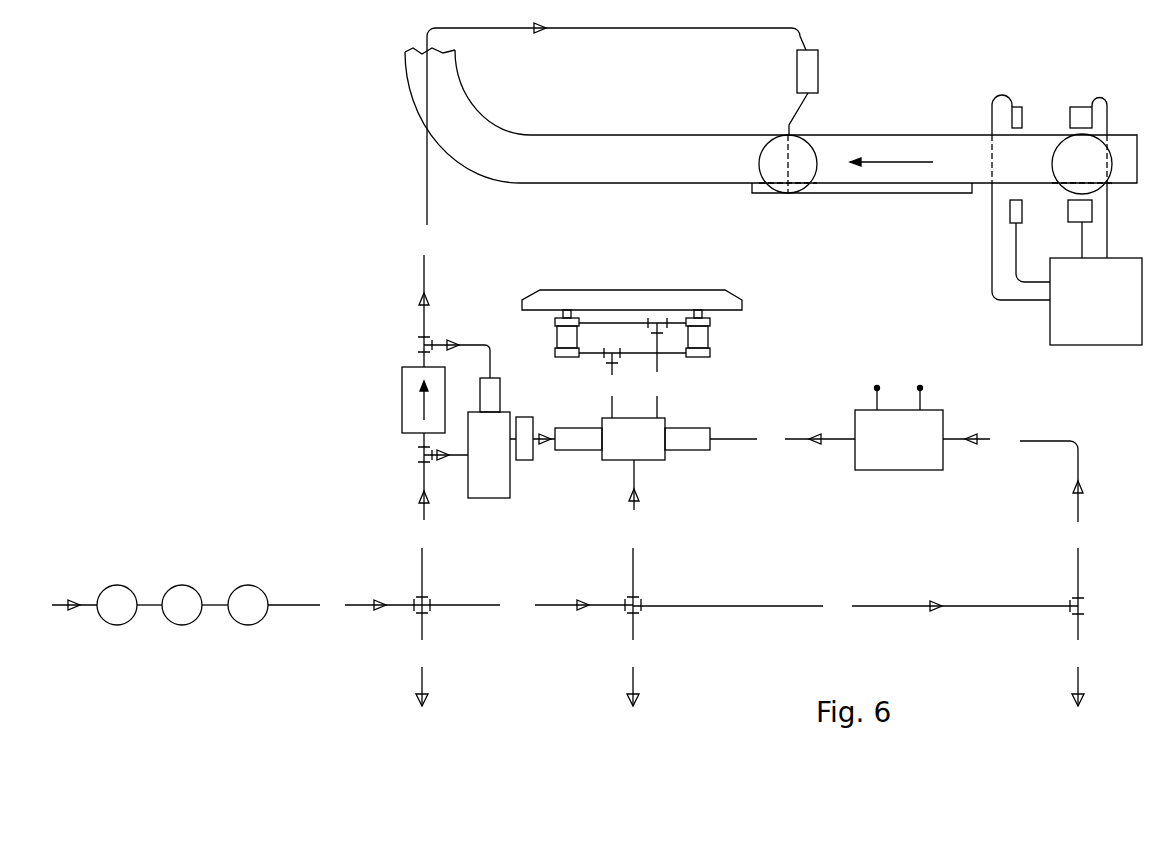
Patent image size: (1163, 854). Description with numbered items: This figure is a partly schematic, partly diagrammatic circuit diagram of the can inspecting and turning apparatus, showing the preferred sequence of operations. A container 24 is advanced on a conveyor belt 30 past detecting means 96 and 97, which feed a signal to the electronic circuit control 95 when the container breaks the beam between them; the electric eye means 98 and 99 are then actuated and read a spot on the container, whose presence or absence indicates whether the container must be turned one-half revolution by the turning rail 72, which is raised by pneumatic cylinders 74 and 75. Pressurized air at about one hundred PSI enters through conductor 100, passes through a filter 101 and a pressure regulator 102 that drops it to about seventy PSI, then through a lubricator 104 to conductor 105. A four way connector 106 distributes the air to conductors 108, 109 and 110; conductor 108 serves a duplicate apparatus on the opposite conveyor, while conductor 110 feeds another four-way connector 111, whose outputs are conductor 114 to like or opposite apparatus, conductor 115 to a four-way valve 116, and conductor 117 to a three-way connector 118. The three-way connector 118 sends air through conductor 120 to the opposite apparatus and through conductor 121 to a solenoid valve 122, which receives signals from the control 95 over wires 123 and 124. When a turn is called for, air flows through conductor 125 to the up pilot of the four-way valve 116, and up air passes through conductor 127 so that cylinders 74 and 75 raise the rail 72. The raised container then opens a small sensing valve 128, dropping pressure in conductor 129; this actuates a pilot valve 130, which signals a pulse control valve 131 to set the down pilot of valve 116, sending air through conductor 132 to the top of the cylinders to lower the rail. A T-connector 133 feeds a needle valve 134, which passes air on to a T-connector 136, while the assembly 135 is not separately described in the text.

The container 24 is at (768, 158).
The conveyor belt 30 is at (607, 137).
The turning rail 72 is at (645, 296).
The pneumatic cylinder 74 is at (710, 338).
The pneumatic cylinder 75 is at (560, 338).
The electronic circuit control 95 is at (1110, 305).
The detecting means 96 is at (1022, 118).
The detecting means 97 is at (1022, 208).
The electric eye means 98 is at (1070, 222).
The electric eye means 99 is at (1072, 118).
The conductor 100 is at (84, 605).
The filter 101 is at (125, 587).
The pressure regulator 102 is at (190, 587).
The lubricator 104 is at (257, 587).
The conductor 105 is at (308, 606).
The four way connector 106 is at (426, 610).
The conductor 108 is at (422, 675).
The conductor 109 is at (424, 560).
The conductor 110 is at (553, 607).
The four-way connector 111 is at (636, 610).
The conductor 114 is at (635, 677).
The conductor 115 is at (635, 560).
The four-way valve 116 is at (645, 452).
The conductor 117 is at (769, 607).
The three-way connector 118 is at (1072, 610).
The conductor 120 is at (1076, 675).
The conductor 121 is at (1077, 503).
The solenoid valve 122 is at (896, 458).
The wire 123 is at (875, 388).
The wire 124 is at (923, 388).
The conductor 125 is at (737, 435).
The conductor 127 is at (608, 370).
The sensing valve 128 is at (815, 70).
The conductor 129 is at (565, 30).
The pilot valve 130 is at (485, 488).
The pulse control valve 131 is at (525, 460).
The conductor 132 is at (660, 370).
The T-connector 133 is at (420, 455).
The needle valve 134 is at (405, 398).
The valve assembly 135 is at (418, 362).
The T-connector 136 is at (420, 343).